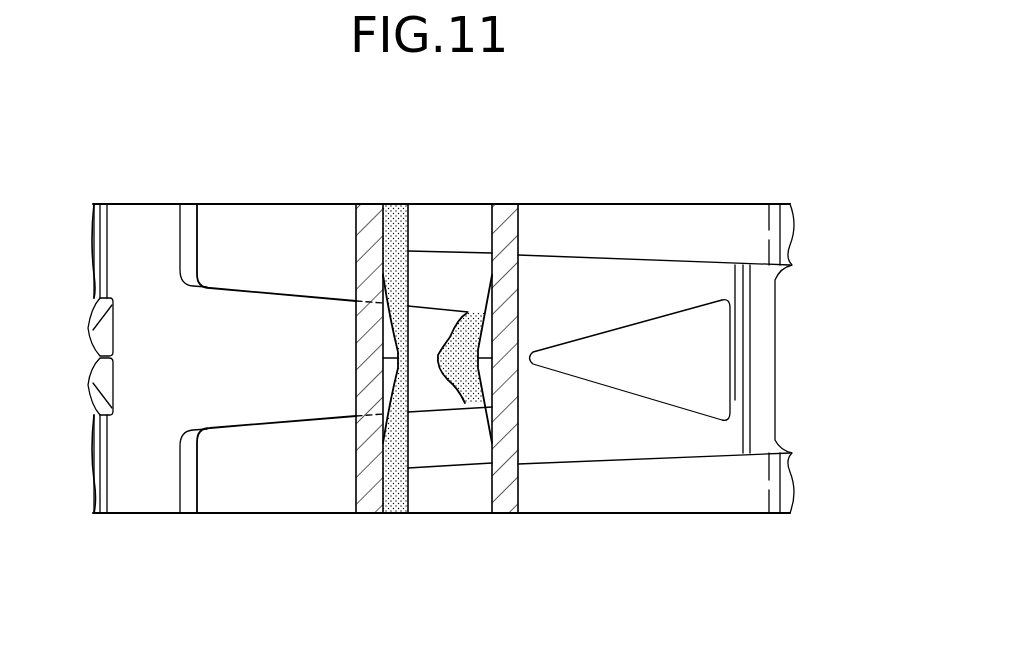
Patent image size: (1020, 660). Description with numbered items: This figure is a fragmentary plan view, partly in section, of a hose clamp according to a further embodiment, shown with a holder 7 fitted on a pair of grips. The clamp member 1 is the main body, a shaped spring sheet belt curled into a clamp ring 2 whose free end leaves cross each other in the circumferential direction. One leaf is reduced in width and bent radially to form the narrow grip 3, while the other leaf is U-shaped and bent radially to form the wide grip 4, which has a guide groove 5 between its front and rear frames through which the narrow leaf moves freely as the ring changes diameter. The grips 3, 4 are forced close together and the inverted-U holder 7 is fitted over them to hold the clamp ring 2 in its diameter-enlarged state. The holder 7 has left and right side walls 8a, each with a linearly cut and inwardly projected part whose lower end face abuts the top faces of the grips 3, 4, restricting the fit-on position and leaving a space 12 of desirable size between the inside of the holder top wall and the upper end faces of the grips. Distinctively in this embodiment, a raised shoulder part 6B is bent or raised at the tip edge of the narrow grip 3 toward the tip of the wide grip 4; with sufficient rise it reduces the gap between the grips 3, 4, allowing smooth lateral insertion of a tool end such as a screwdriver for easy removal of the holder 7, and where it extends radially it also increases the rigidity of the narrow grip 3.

The clamp member 1 is at (674, 187).
The clamp ring 2 is at (143, 495).
The narrow grip 3 is at (484, 333).
The wide grip 4 is at (392, 397).
The guide groove 5 is at (668, 430).
The raised shoulder part 6B is at (437, 350).
The holder 7 is at (333, 259).
The side wall 8a is at (501, 215).
The space 12 is at (462, 433).